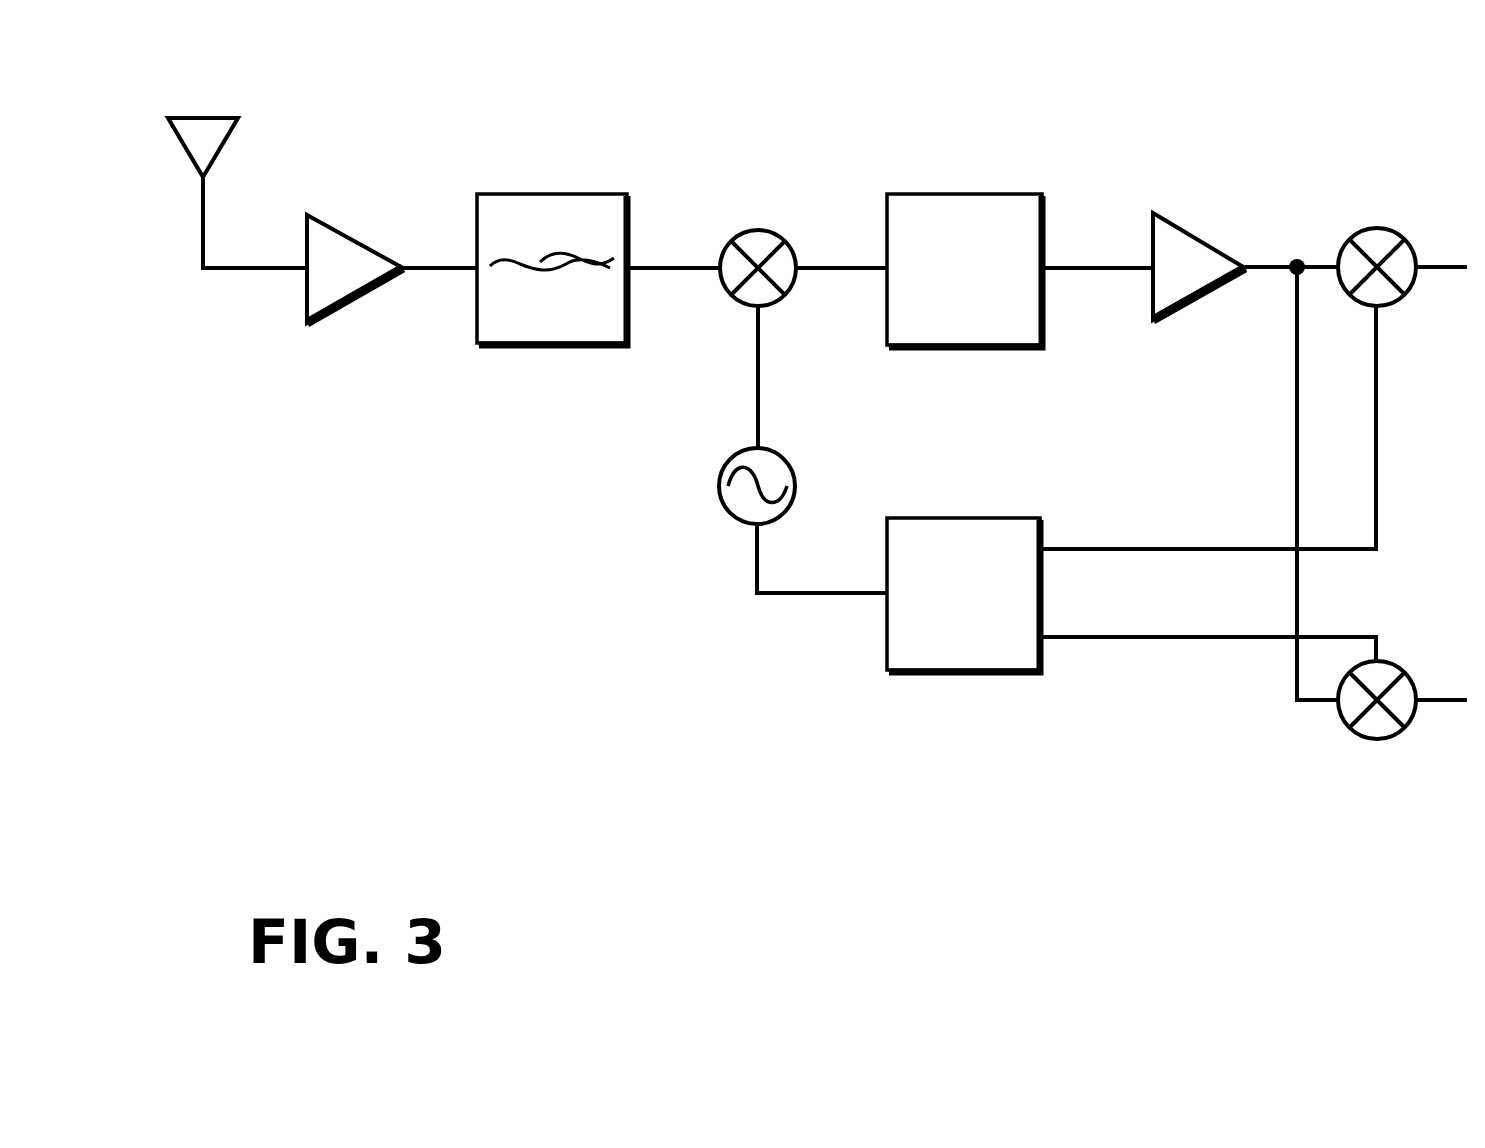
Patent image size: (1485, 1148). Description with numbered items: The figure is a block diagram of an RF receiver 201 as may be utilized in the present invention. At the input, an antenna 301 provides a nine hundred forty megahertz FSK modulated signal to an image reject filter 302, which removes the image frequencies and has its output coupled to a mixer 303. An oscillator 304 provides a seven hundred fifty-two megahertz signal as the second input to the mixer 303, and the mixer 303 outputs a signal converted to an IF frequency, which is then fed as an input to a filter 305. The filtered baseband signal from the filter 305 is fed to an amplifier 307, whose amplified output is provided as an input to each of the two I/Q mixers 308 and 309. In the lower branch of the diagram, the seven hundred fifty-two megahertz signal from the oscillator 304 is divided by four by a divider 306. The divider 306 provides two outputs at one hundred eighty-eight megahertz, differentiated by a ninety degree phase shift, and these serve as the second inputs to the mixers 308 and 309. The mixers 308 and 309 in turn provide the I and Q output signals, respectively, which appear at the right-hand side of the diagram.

The RF receiver 201 is at (455, 617).
The antenna 301 is at (238, 150).
The image reject filter 302 is at (552, 269).
The mixer 303 is at (743, 238).
The oscillator 304 is at (722, 503).
The filter 305 is at (964, 270).
The divider 306 is at (963, 595).
The amplifier 307 is at (1199, 266).
The I mixer 308 is at (1357, 230).
The Q mixer 309 is at (1342, 720).